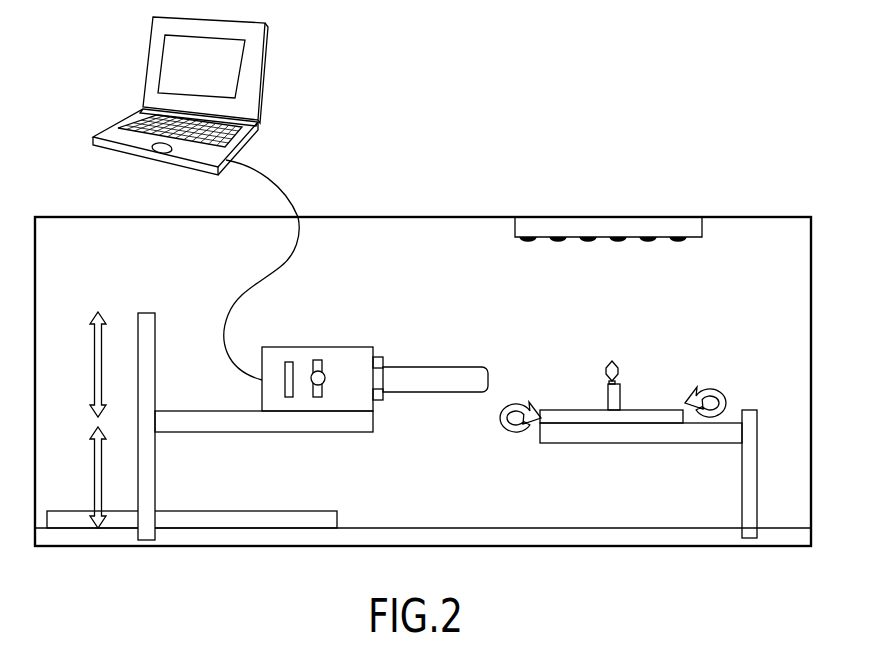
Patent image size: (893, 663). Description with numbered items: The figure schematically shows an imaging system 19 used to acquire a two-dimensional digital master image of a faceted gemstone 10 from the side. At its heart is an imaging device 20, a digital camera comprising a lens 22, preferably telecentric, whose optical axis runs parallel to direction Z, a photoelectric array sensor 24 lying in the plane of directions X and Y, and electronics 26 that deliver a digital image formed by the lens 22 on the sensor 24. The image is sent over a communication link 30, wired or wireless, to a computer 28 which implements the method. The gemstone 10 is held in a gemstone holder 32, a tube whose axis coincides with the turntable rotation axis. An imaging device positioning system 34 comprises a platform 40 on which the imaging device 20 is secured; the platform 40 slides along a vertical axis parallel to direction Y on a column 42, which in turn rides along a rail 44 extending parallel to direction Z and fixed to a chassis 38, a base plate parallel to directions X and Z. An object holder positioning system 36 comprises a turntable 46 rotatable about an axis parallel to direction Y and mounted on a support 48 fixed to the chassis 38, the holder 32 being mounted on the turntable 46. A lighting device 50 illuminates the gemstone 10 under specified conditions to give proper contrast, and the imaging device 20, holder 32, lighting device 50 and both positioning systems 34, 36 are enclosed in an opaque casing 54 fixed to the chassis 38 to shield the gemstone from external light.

The gemstone 10 is at (627, 370).
The imaging system 19 is at (745, 172).
The imaging device 20 is at (367, 322).
The lens 22 is at (447, 373).
The photoelectric array sensor 24 is at (321, 364).
The electronics 26 is at (288, 360).
The computer 28 is at (120, 60).
The communication link 30 is at (277, 170).
The gemstone holder 32 is at (620, 393).
The imaging device positioning system 34 is at (120, 423).
The object holder positioning system 36 is at (575, 410).
The chassis 38 is at (518, 540).
The platform 40 is at (260, 426).
The column 42 is at (156, 350).
The rail 44 is at (225, 520).
The turntable 46 is at (582, 418).
The support 48 is at (613, 433).
The lighting device 50 is at (602, 225).
The casing 54 is at (442, 210).